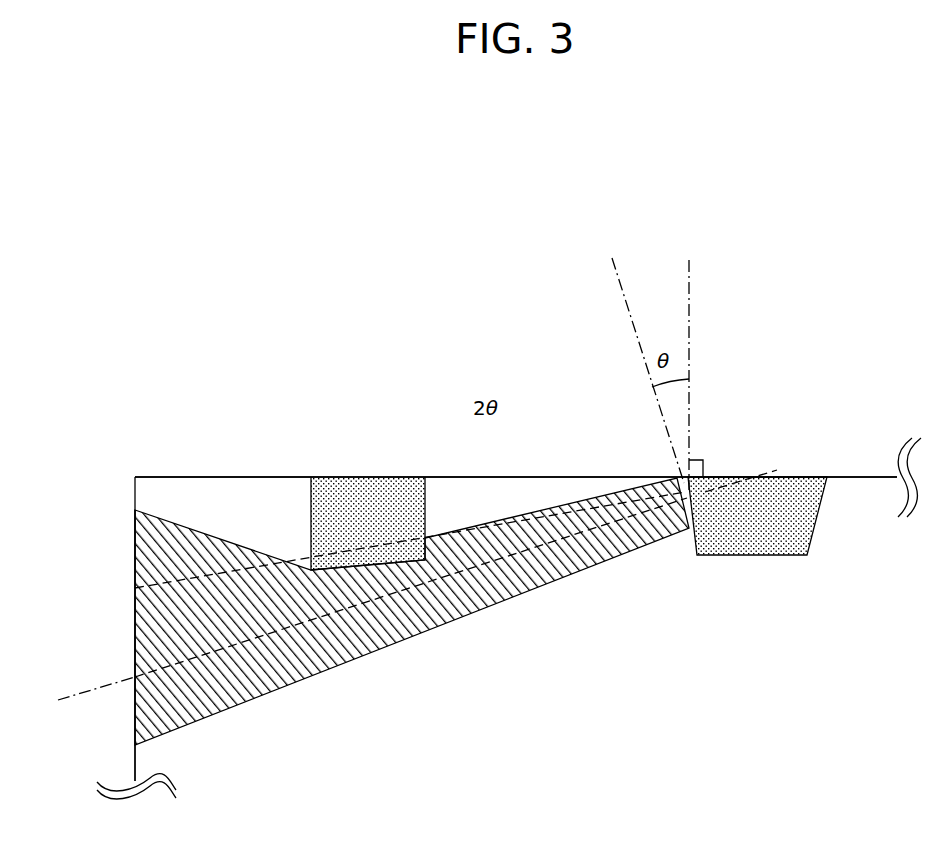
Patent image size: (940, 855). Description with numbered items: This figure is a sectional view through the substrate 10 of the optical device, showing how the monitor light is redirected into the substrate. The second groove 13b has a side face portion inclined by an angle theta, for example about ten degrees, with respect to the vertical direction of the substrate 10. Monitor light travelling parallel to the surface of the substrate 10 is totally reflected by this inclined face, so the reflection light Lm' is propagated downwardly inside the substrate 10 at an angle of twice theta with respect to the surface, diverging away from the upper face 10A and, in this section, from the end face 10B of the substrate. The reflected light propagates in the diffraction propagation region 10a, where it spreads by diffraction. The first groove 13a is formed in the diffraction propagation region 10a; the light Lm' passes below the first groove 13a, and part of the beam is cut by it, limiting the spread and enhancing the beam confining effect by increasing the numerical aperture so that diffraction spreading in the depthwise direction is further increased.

The substrate 10 is at (222, 515).
The upper face of the substrate 10A is at (445, 477).
The light incident end surface of light guide plate 10B is at (136, 773).
The diffraction propagation region 10a is at (378, 648).
The first groove 13a is at (366, 500).
The second groove 13b is at (802, 502).